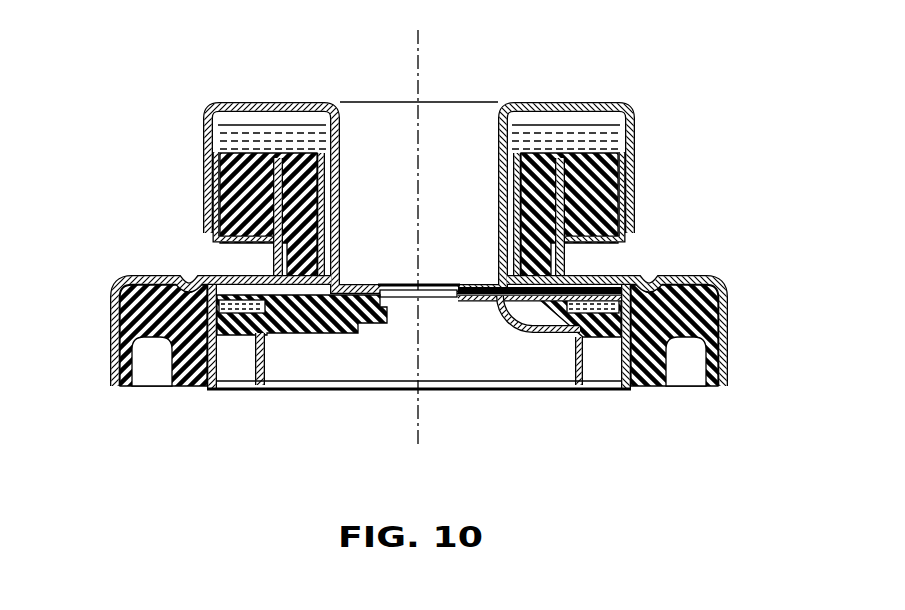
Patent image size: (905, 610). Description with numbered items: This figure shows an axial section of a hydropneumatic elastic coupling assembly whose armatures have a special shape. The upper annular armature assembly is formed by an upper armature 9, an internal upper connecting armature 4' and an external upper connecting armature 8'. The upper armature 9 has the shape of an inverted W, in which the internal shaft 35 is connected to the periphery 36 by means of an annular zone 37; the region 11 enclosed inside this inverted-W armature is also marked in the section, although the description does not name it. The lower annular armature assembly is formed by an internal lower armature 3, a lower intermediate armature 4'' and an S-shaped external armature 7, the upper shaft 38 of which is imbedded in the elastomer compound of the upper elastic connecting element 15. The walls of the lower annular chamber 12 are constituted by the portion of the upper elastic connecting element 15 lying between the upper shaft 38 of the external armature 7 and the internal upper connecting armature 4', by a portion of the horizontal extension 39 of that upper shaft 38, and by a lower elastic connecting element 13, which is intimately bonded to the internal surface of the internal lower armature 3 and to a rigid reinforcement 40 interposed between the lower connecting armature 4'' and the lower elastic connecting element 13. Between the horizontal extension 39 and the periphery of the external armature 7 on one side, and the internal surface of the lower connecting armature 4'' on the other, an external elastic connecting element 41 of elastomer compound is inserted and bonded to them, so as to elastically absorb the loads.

The internal lower armature 3 is at (520, 309).
The internal upper connecting armature 4' is at (419, 155).
The lower intermediate armature 4'' is at (382, 414).
The S-shaped external armature 7 is at (110, 340).
The external upper connecting armature 8' is at (196, 193).
The upper armature 9 is at (201, 207).
The lubricant chamber 11 is at (270, 120).
The lower annular chamber 12 is at (294, 299).
The lower elastic connecting element 13 is at (597, 348).
The upper elastic connecting element 15 is at (613, 180).
The internal shaft 35 is at (346, 153).
The periphery 36 is at (200, 130).
The annular zone 37 is at (552, 102).
The upper shaft 38 is at (297, 218).
The horizontal extension 39 is at (147, 273).
The rigid reinforcement 40 is at (214, 392).
The external elastic connecting element 41 is at (715, 285).